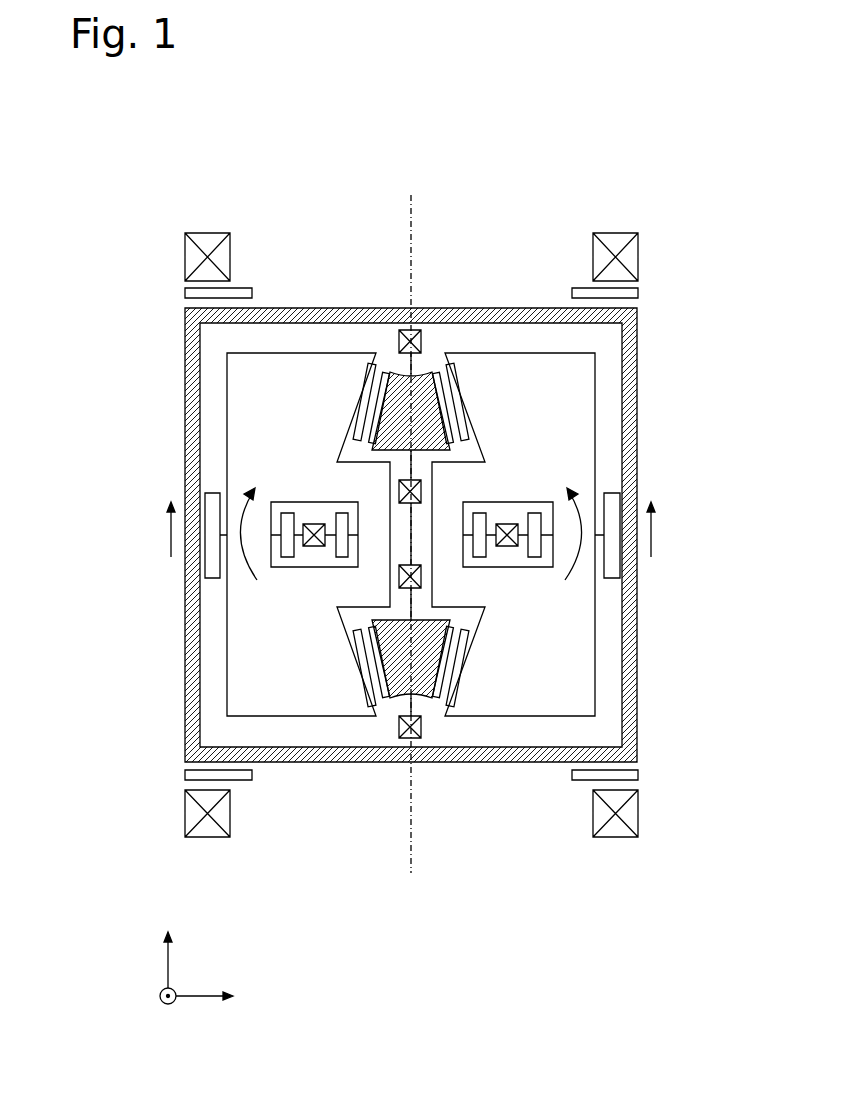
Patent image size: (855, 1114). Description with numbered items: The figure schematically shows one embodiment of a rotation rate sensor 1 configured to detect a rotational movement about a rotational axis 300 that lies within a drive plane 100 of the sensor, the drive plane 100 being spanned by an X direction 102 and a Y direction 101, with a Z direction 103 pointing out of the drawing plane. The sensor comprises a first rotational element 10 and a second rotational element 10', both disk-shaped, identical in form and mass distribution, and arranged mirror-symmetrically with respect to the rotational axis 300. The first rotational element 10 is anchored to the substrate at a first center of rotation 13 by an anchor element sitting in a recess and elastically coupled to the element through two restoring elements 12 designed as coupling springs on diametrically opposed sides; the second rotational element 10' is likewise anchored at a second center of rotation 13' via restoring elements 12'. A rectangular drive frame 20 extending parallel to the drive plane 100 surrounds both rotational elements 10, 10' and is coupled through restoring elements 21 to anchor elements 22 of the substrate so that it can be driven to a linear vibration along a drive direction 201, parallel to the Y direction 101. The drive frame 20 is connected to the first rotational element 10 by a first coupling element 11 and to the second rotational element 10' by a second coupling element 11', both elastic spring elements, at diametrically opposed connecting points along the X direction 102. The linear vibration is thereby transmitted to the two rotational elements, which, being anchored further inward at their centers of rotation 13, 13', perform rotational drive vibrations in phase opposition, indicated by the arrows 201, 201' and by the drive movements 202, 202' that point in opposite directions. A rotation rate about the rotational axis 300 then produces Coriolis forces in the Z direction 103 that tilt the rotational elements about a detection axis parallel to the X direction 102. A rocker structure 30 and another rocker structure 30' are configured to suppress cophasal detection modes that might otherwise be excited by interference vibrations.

The rotation rate sensor 1 is at (122, 192).
The first rotational element 10 is at (259, 534).
The second rotational element 10' is at (566, 534).
The first coupling element 11 is at (176, 536).
The second coupling element 11' is at (651, 535).
The restoring element 12 is at (314, 511).
The restoring element 12' is at (508, 511).
The first center of rotation 13 is at (315, 571).
The second center of rotation 13' is at (511, 571).
The drive frame 20 is at (638, 372).
The restoring element 21 is at (254, 291).
The anchor element 22 is at (192, 255).
The rocker structure 30 is at (415, 656).
The another rocker structure 30' is at (418, 379).
The drive plane 100 is at (201, 960).
The Y direction 101 is at (168, 958).
The X direction 102 is at (196, 997).
The Z direction 103 is at (161, 1002).
The drive direction 201 is at (136, 529).
The drive direction 201' is at (693, 529).
The drive movement 202 is at (184, 555).
The drive movement 202' is at (642, 555).
The rotational axis 300 is at (409, 858).